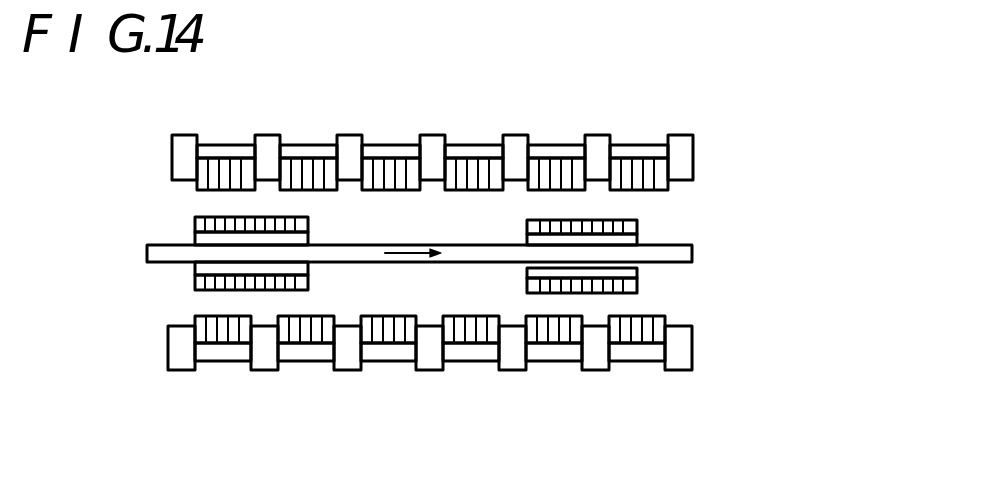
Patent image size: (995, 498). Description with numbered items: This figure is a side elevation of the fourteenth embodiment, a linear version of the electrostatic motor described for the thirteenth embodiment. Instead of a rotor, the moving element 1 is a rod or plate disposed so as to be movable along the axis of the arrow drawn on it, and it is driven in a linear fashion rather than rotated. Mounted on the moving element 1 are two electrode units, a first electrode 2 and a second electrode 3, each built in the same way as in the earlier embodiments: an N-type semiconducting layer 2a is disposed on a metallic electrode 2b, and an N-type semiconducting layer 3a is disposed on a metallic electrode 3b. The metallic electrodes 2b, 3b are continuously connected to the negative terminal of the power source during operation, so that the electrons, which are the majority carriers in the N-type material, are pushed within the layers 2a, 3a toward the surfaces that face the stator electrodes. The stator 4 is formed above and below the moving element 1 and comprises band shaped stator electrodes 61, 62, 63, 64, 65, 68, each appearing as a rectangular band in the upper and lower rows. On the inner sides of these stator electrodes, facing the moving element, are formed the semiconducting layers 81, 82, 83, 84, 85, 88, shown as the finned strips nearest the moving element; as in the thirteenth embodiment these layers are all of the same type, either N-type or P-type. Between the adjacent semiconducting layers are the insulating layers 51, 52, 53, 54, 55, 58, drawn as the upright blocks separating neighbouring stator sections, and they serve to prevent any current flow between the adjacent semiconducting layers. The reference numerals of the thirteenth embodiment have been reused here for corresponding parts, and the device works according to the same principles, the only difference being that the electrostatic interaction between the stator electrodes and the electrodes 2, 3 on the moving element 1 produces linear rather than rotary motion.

The moving element 1 is at (147, 248).
The electrode 2 is at (258, 251).
The N-type semiconducting layer 2a is at (307, 218).
The metallic electrode 2b is at (308, 240).
The electrode 3 is at (584, 260).
The N-type semiconducting layer 3a is at (527, 221).
The metallic electrode 3b is at (527, 240).
The stator 4 is at (461, 252).
The insulating layer 51 is at (350, 140).
The insulating layer 52 is at (432, 140).
The insulating layer 53 is at (517, 140).
The insulating layer 54 is at (598, 140).
The insulating layer 55 is at (680, 140).
The insulating layer 58 is at (267, 140).
The stator electrode 61 is at (329, 153).
The stator electrode 62 is at (412, 153).
The stator electrode 63 is at (495, 153).
The stator electrode 64 is at (577, 153).
The stator electrode 65 is at (660, 153).
The stator electrode 68 is at (247, 153).
The semiconducting layer 81 is at (286, 146).
The semiconducting layer 82 is at (368, 146).
The semiconducting layer 83 is at (451, 146).
The semiconducting layer 84 is at (534, 146).
The semiconducting layer 85 is at (616, 146).
The semiconducting layer 88 is at (203, 146).